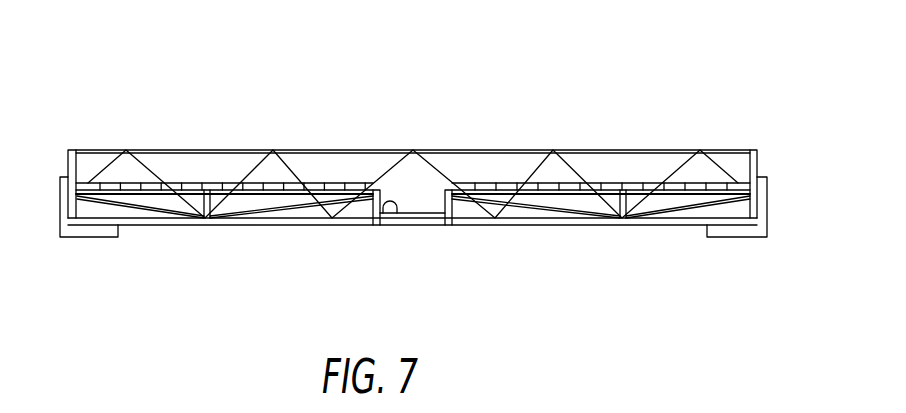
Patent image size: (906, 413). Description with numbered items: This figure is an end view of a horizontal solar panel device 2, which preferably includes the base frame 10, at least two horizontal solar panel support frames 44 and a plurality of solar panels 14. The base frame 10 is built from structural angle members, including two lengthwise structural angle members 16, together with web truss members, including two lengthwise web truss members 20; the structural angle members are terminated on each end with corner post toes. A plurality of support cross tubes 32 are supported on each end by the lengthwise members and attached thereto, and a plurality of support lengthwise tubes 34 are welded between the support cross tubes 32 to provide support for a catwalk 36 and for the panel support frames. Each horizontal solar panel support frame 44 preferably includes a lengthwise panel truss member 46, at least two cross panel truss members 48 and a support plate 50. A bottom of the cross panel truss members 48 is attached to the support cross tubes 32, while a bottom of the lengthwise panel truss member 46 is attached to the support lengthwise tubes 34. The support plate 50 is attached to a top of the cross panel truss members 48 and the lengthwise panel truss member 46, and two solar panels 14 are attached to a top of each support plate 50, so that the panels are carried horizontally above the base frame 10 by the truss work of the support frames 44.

The horizontal solar panel device 2 is at (565, 114).
The base frame 10 is at (100, 276).
The solar panel 14 is at (172, 182).
The lengthwise structural angle member 16 is at (63, 207).
The lengthwise web truss member 20 is at (67, 158).
The support cross tube 32 is at (208, 223).
The support lengthwise tube 34 is at (377, 222).
The catwalk 36 is at (418, 213).
The horizontal solar panel support frame 44 is at (324, 165).
The lengthwise panel truss member 46 is at (392, 223).
The cross panel truss member 48 is at (282, 212).
The support plate 50 is at (163, 201).